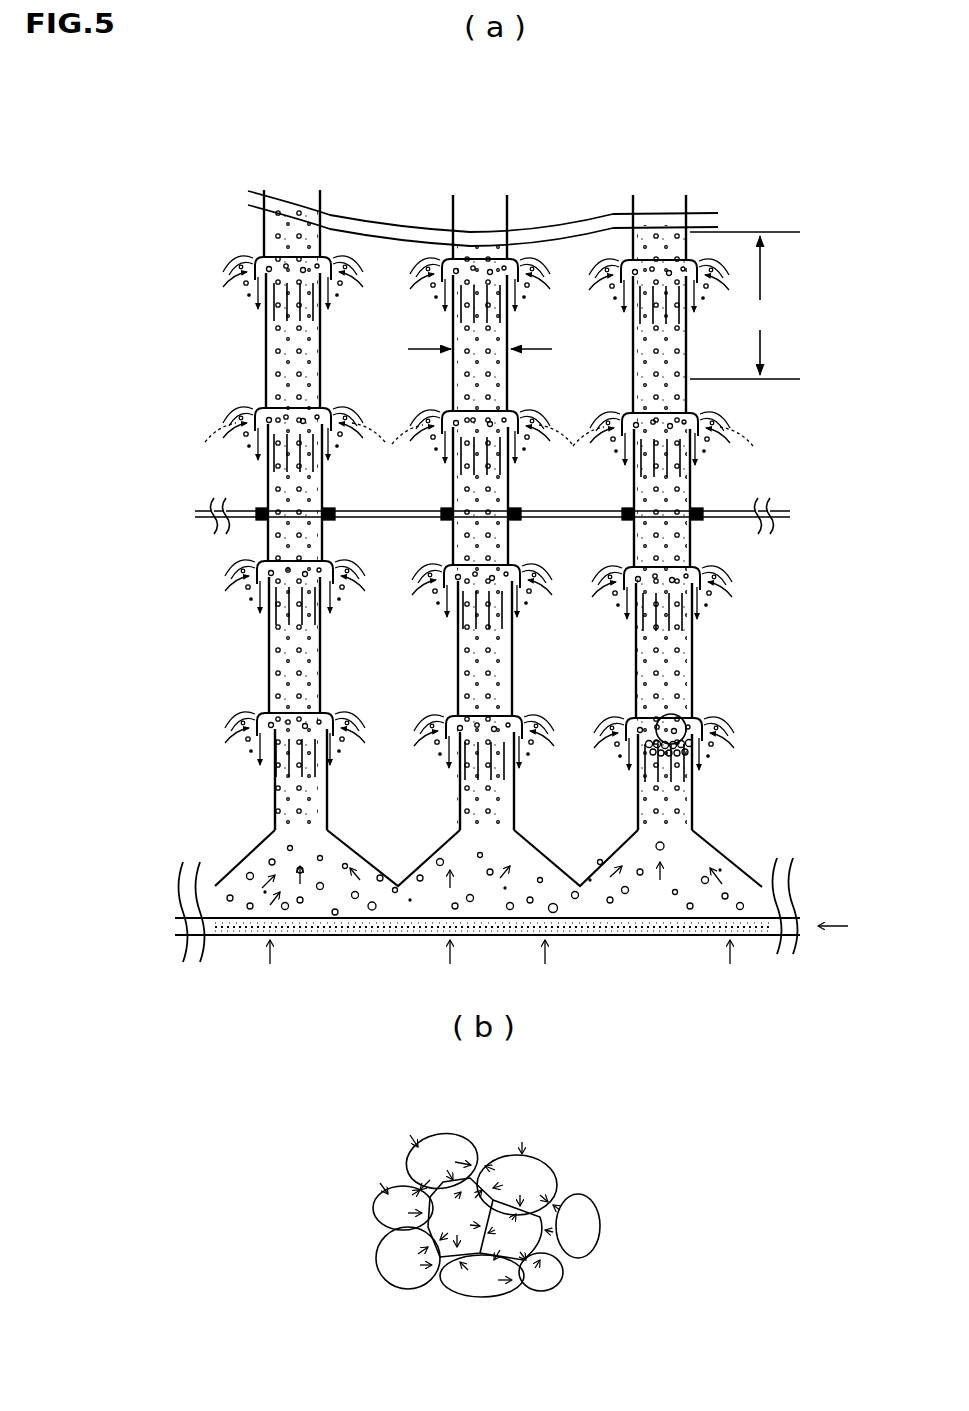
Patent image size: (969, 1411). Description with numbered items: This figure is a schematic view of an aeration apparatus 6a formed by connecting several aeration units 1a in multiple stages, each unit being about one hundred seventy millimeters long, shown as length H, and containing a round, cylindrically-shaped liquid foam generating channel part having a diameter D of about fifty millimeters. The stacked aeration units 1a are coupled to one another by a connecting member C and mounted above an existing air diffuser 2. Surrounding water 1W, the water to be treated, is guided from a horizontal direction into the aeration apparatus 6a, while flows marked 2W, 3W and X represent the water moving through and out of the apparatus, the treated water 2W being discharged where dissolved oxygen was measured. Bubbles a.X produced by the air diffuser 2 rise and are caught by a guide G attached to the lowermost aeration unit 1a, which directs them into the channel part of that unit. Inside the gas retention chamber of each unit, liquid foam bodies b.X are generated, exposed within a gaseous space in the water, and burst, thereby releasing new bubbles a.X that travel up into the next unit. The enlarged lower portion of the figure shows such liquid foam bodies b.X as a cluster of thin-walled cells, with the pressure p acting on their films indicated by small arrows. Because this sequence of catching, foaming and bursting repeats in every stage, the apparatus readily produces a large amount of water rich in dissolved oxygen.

The aeration apparatus 6a is at (207, 152).
The aeration unit 1a is at (190, 300).
The water flow through gap 3W is at (719, 429).
The treated water 2W is at (492, 505).
The connecting member C is at (551, 521).
The length of aeration unit H is at (745, 305).
The diameter of liquid foam generating channel part D is at (491, 349).
The guide G is at (711, 844).
The air diffuser 2 is at (420, 936).
The surrounding water 1W is at (500, 954).
The fluid X is at (846, 928).
The bubbles a.X is at (657, 846).
The liquid foam bodies b.X is at (688, 724).
The pressure p is at (473, 1203).